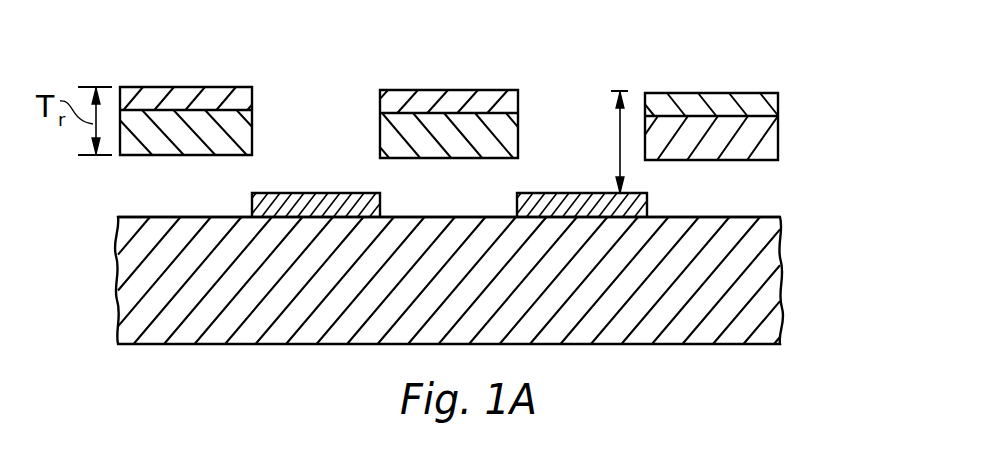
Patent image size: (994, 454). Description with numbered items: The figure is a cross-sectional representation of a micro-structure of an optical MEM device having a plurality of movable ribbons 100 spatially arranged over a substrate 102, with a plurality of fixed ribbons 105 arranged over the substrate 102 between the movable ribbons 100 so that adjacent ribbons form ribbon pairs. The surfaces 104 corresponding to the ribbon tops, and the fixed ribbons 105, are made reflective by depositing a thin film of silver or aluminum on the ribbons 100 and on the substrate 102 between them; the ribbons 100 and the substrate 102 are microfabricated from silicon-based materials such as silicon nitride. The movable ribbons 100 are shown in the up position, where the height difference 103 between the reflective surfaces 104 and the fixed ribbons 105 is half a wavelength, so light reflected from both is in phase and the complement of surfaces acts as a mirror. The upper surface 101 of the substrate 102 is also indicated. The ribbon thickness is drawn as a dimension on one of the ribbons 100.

The movable ribbons 100 is at (252, 114).
The substrate surface 101 is at (757, 221).
The substrate 102 is at (780, 290).
The height difference 103 is at (617, 119).
The reflective surfaces 104 is at (177, 87).
The fixed ribbons 105 is at (150, 187).